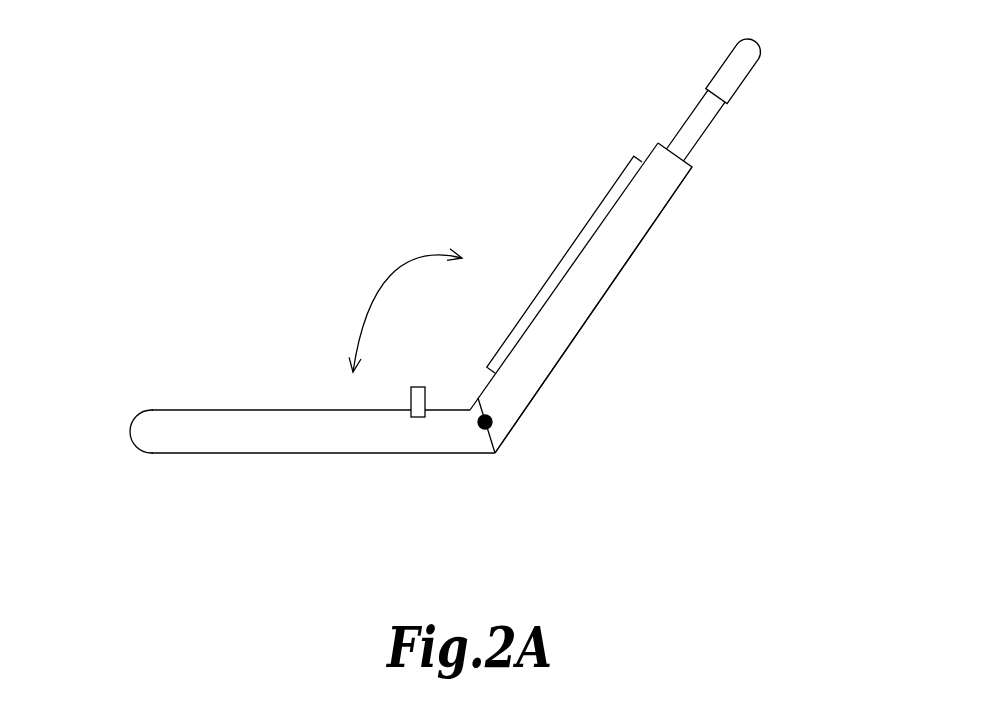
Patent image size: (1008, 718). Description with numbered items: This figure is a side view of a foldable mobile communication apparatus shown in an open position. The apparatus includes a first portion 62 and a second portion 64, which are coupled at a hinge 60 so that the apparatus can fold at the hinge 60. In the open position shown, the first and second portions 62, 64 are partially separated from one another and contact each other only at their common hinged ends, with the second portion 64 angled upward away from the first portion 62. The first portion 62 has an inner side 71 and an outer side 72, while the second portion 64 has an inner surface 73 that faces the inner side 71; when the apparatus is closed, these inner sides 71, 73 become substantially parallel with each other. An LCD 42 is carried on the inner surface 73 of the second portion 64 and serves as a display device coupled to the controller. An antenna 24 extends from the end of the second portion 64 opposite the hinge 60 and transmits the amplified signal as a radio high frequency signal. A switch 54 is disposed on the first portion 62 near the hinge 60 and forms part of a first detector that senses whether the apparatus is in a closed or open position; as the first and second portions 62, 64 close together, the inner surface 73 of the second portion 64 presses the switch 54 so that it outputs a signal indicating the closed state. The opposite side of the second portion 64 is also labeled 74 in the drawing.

The antenna 24 is at (701, 142).
The Liquid Crystal Display (LCD) 42 is at (572, 236).
The switch 54 is at (410, 417).
The hinge 60 is at (480, 440).
The first portion 62 is at (232, 410).
The second portion 64 is at (625, 265).
The inner side of first portion 71 is at (311, 393).
The outer side of first portion 72 is at (324, 475).
The inner surface of second portion 73 is at (564, 274).
The back surface of second portion 74 is at (593, 310).